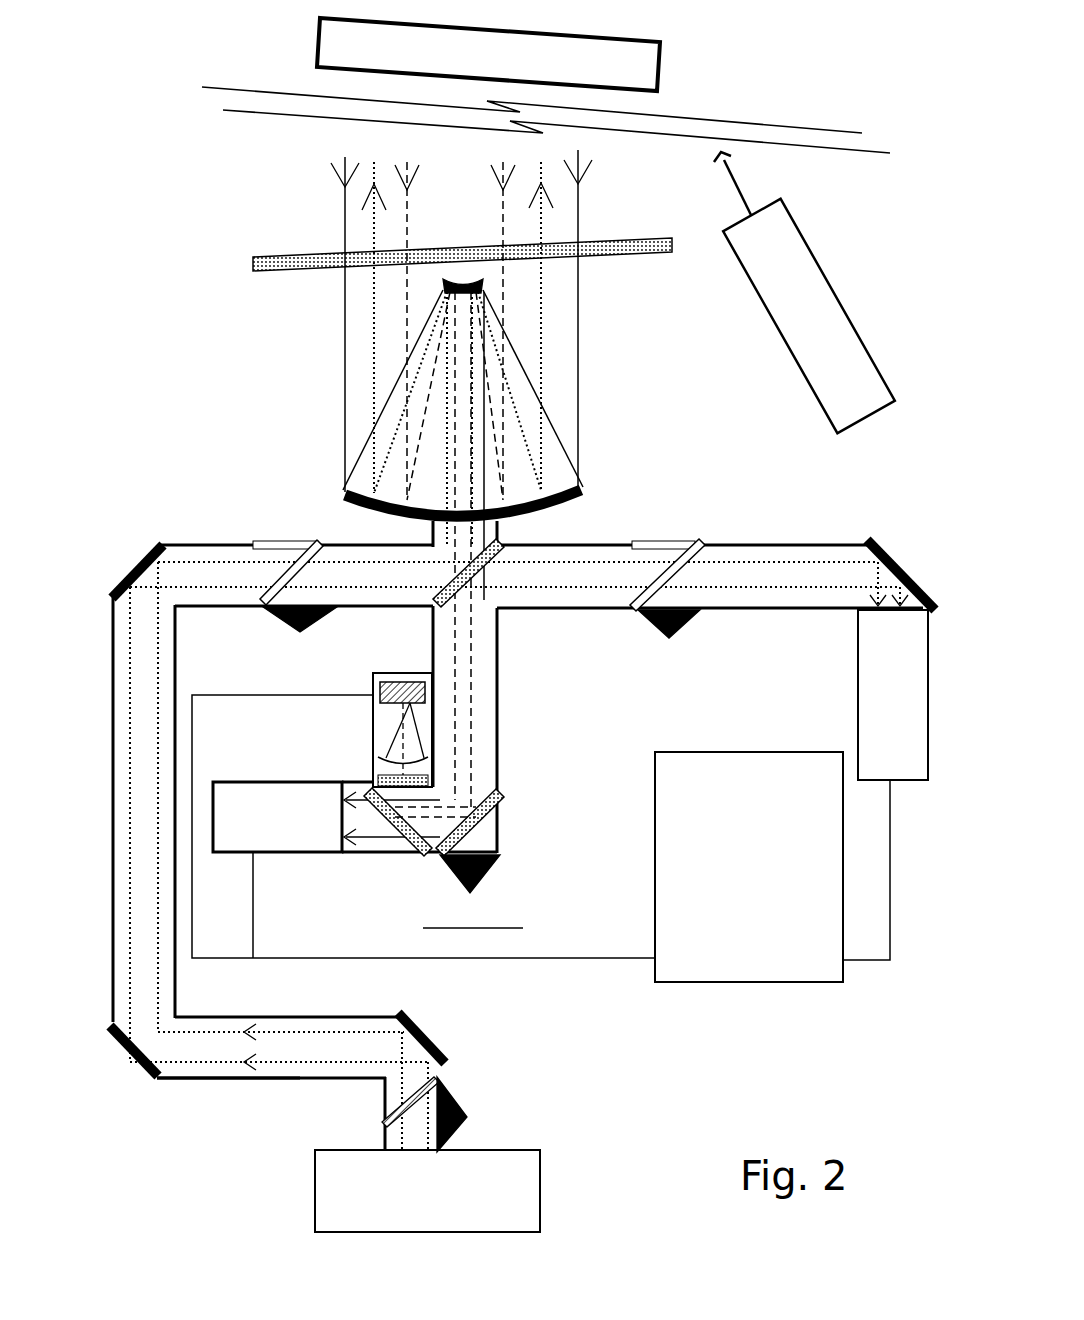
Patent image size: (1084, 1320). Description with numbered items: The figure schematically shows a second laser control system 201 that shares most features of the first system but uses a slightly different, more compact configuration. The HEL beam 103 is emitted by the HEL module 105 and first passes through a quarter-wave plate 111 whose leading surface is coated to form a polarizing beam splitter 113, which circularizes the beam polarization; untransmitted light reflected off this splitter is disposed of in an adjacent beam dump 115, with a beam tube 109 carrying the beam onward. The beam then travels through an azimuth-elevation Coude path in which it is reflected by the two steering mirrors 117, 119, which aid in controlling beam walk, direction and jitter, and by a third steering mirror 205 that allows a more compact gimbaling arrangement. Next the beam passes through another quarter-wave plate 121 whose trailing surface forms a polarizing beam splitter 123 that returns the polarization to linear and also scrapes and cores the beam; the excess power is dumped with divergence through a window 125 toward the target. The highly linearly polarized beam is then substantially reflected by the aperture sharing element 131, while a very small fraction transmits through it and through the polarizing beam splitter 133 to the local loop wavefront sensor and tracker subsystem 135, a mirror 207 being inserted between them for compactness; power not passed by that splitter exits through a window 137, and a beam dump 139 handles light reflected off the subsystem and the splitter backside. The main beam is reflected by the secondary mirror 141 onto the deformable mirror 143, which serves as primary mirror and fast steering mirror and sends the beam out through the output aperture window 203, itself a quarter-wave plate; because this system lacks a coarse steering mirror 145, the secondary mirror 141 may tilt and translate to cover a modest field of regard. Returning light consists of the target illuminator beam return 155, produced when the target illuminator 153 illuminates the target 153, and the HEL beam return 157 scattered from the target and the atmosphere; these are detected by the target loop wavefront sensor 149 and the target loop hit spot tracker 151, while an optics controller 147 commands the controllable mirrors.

The laser control system 201 is at (205, 168).
The target illuminator 153 is at (647, 70).
The coarse steering mirror 145 is at (810, 390).
The output aperture window 203 is at (617, 237).
The HEL beam return 157 is at (345, 218).
The target illuminator beam return 155 is at (405, 349).
The HEL beam 103 is at (374, 417).
The secondary mirror 141 is at (443, 291).
The deformable mirror 143 is at (350, 500).
The window 125 is at (275, 547).
The window 137 is at (672, 543).
The steering mirror 119 is at (140, 563).
The mirror 207 is at (897, 565).
The steering mirror 117 is at (133, 1057).
The third steering mirror 205 is at (423, 1040).
The beam tube 109 is at (183, 1082).
The quarter-wave plate 121 is at (275, 591).
The polarizing beam splitter 123 is at (308, 580).
The aperture sharing element 131 is at (505, 612).
The polarizing beam splitter 133 is at (680, 570).
The beam dump 139 is at (670, 638).
The local loop wavefront sensor and tracker subsystem 135 is at (857, 718).
The optics controller 147 is at (655, 838).
The target loop wavefront sensor 149 is at (268, 788).
The target loop hit spot tracker 151 is at (383, 688).
The quarter-wave plate 111 is at (392, 1123).
The polarizing beam splitter 113 is at (413, 1103).
The beam dump 115 is at (453, 1098).
The HEL module 105 is at (537, 1190).